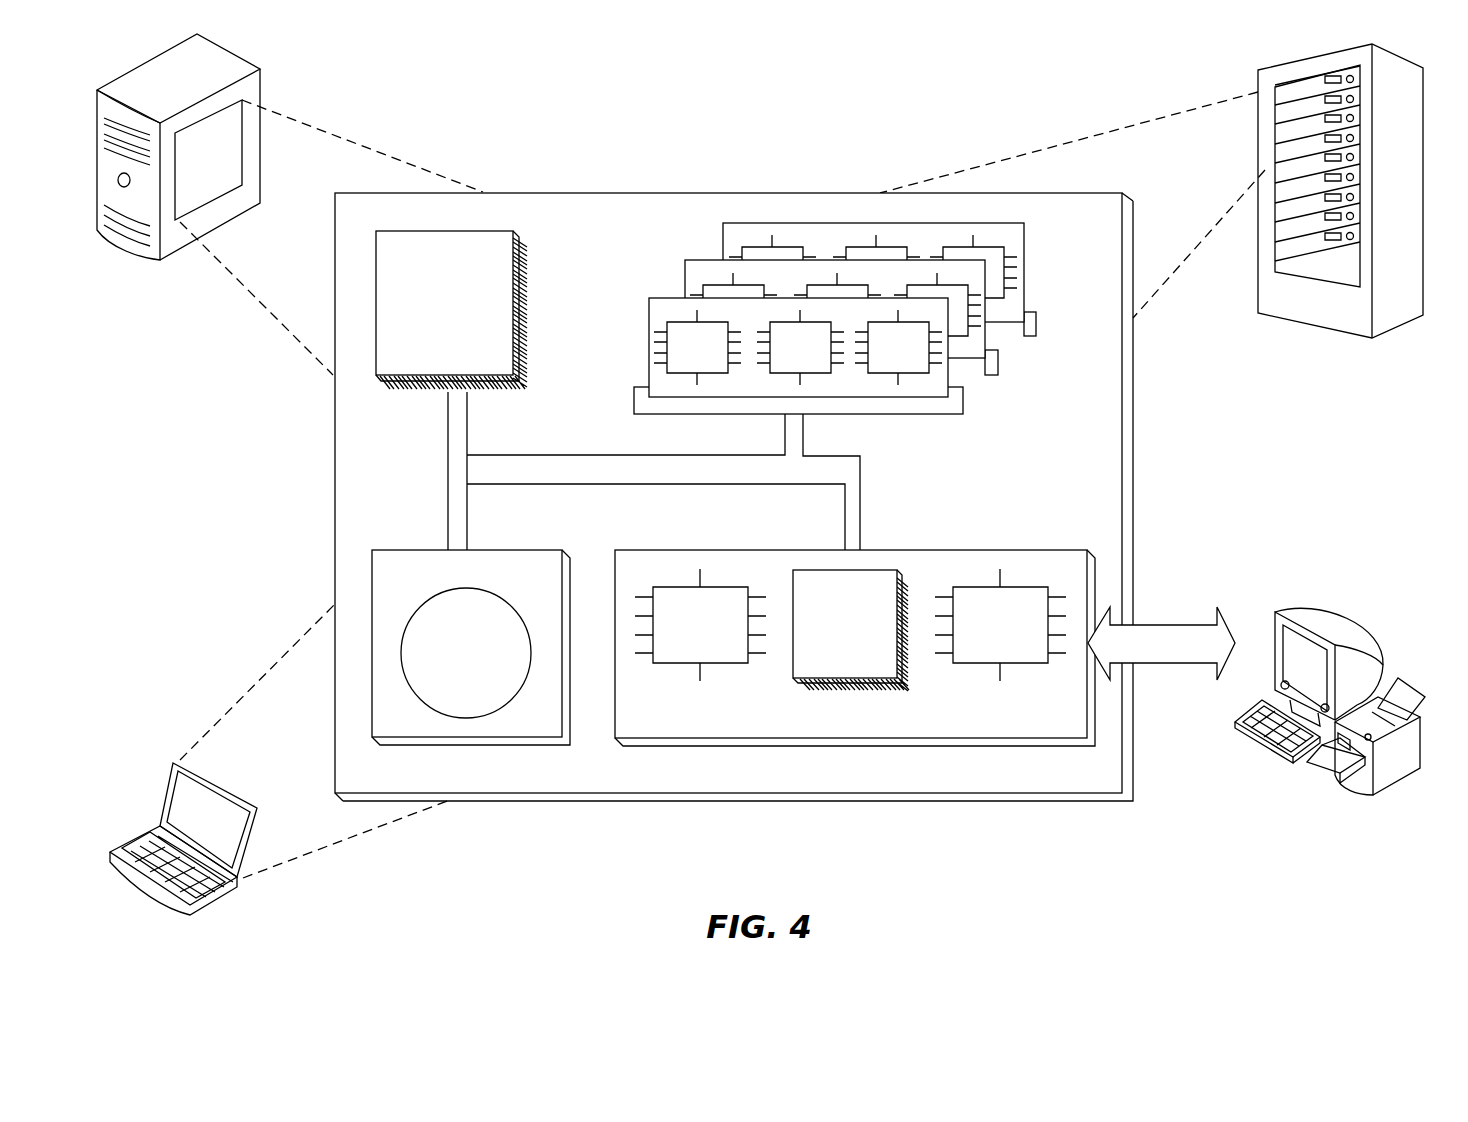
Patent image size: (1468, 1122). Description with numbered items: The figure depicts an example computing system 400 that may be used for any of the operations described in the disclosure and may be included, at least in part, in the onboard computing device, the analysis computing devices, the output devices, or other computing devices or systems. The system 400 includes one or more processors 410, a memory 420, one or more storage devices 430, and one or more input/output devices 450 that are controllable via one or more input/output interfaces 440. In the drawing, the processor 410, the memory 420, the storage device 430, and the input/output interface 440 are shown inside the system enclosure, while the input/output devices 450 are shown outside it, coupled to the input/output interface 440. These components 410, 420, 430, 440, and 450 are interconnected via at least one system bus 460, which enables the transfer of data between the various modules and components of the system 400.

The computing system 400 is at (546, 111).
The processor 410 is at (451, 310).
The memory 420 is at (1030, 371).
The storage device 430 is at (471, 647).
The input/output interface 440 is at (855, 648).
The input/output device 450 is at (1275, 617).
The system bus 460 is at (650, 475).